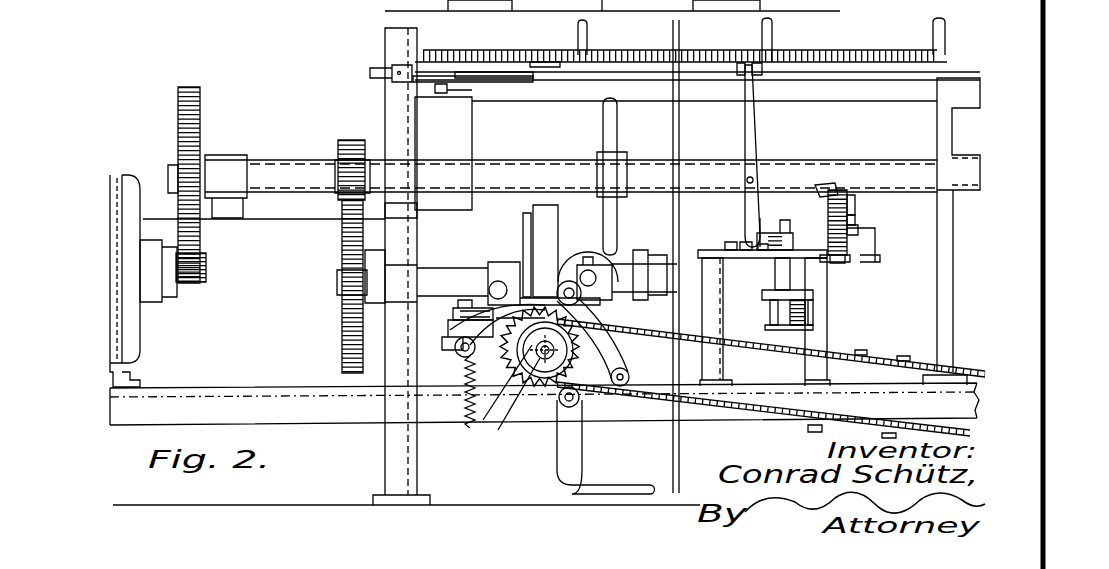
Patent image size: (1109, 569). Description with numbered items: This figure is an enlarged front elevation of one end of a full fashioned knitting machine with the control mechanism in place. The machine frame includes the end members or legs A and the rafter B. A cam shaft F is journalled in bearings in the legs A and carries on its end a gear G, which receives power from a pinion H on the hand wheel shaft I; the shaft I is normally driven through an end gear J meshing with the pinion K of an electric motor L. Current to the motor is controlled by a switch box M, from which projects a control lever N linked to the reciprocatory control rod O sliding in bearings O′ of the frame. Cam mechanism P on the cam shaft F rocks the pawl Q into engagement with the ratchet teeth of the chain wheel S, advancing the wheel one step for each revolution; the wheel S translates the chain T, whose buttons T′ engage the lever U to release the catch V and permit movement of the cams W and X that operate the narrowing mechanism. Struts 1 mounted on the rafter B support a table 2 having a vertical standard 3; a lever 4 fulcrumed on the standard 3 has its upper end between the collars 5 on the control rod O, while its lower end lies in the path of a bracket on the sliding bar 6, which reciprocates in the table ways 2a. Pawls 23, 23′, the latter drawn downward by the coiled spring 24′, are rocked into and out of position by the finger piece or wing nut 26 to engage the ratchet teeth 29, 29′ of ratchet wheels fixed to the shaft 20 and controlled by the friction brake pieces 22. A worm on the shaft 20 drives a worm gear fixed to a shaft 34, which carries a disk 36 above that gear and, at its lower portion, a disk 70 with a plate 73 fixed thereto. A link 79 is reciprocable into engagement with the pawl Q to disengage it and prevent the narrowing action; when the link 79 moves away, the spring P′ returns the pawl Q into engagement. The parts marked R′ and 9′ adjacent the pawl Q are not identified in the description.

The legs A is at (395, 469).
The rafter B is at (322, 415).
The electric motor L is at (140, 346).
The pinion K is at (200, 292).
The end gear J is at (200, 105).
The hand wheel shaft I is at (280, 170).
The pinion H is at (356, 143).
The gear G is at (342, 258).
The bearings O′ is at (400, 68).
The switch box M is at (460, 120).
The control lever N is at (530, 82).
The control rod O is at (562, 72).
The buttons T′ is at (612, 133).
The cam W is at (618, 232).
The cam X is at (560, 245).
The lever U is at (520, 290).
The cam shaft F is at (458, 302).
The cam mechanism P is at (458, 350).
The pawl Q is at (508, 338).
The chain wheel S is at (545, 360).
The spring P′ is at (470, 410).
The pawl arm R′ is at (484, 425).
The pawl 9′ is at (517, 404).
The catch V is at (592, 405).
The chain T is at (812, 428).
The lever 4 is at (753, 142).
The collars 5 is at (760, 70).
The table 2 is at (708, 250).
The table ways 2a is at (730, 242).
The sliding bar 6 is at (744, 242).
The disk 36 is at (775, 228).
The vertical standard 3 is at (762, 206).
The pawl 23 is at (830, 205).
The finger piece 26 is at (836, 188).
The ratchet teeth 29 is at (850, 226).
The pawl 23′ is at (848, 204).
The coiled spring 24′ is at (850, 216).
The ratchet teeth 29′ is at (852, 228).
The shaft 20 is at (862, 238).
The friction brake pieces 22 is at (836, 258).
The plate 73 is at (788, 292).
The shaft 34 is at (780, 282).
The disk 70 is at (770, 318).
The link 79 is at (760, 325).
The struts 1 is at (708, 297).